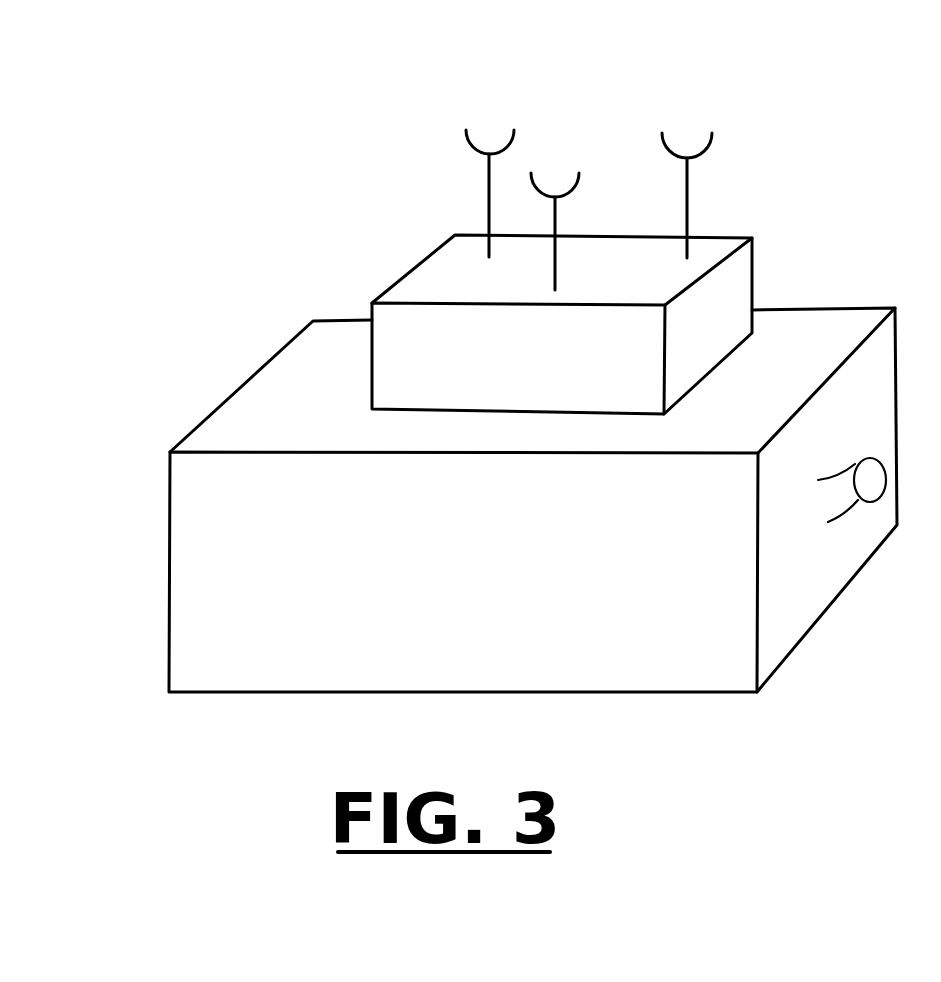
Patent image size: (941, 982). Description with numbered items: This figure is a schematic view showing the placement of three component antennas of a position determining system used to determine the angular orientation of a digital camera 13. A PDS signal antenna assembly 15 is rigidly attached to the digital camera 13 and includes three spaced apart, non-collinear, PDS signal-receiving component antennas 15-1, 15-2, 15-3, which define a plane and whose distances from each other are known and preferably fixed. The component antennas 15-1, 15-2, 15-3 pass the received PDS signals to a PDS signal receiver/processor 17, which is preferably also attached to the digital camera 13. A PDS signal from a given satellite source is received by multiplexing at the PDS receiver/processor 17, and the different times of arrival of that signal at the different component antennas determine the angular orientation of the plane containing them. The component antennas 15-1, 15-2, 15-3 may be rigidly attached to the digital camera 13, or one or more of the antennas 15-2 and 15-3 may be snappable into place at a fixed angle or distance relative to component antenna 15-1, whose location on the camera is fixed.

The digital camera 13 is at (213, 658).
The PDS signal antenna assembly 15 is at (747, 100).
The component antenna 15-1 is at (487, 157).
The component antenna 15-2 is at (553, 255).
The component antenna 15-3 is at (688, 201).
The PDS signal receiver/processor 17 is at (740, 285).